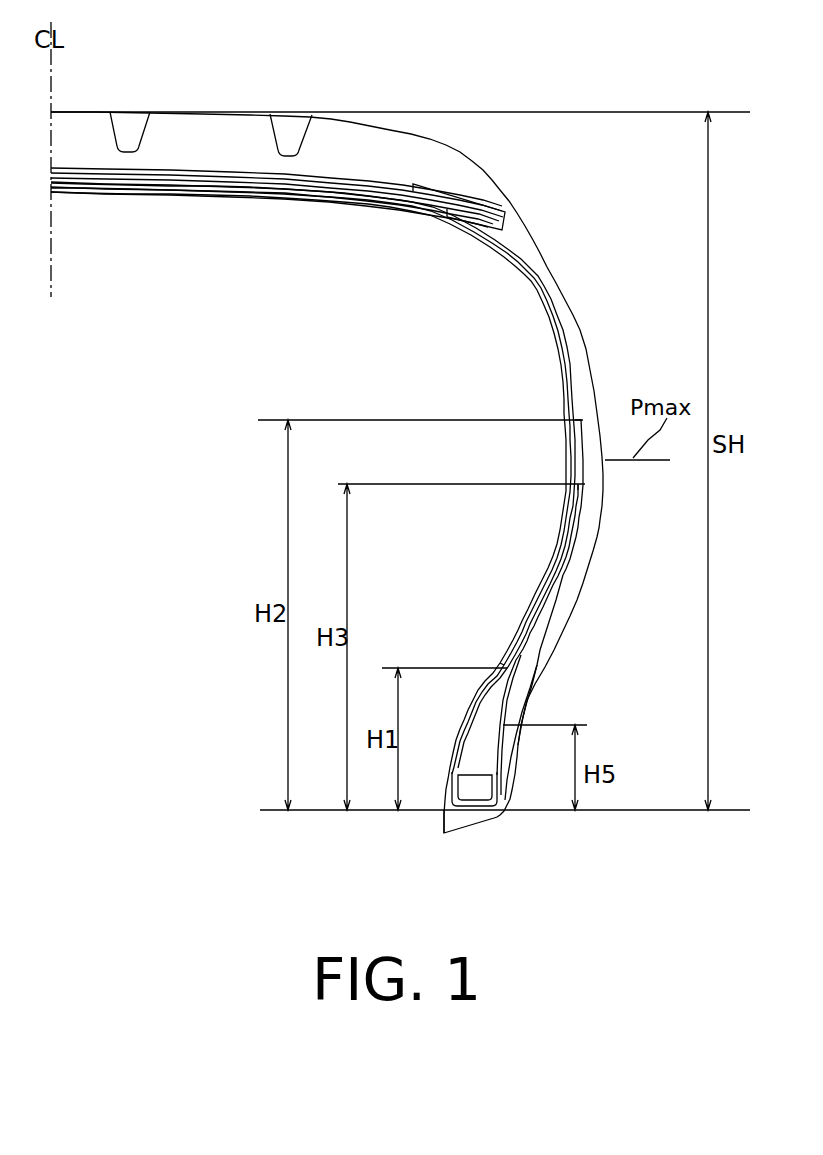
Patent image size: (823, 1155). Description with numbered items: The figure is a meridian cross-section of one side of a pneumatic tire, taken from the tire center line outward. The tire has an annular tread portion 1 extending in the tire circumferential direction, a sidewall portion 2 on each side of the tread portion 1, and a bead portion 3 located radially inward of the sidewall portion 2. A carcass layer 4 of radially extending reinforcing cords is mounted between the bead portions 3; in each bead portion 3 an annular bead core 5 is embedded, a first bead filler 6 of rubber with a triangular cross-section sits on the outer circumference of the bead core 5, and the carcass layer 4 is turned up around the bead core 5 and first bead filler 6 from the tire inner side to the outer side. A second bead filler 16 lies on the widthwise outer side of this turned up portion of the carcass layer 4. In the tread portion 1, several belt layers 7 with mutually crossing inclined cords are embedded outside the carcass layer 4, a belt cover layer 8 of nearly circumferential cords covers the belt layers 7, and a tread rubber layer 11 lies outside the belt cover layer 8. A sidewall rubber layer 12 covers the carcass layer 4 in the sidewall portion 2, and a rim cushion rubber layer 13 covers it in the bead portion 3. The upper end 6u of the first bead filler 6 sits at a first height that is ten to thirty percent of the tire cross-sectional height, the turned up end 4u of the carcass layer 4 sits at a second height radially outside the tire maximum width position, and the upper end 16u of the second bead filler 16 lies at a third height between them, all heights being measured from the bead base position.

The tread portion 1 is at (409, 130).
The sidewall portion 2 is at (604, 376).
The bead portion 3 is at (520, 794).
The carcass layer 4 is at (545, 290).
The turned up end of the carcass layer 4u is at (576, 420).
The bead core 5 is at (470, 787).
The first bead filler 6 is at (482, 722).
The upper end of the first bead filler 6u is at (500, 660).
The belt layers 7 is at (400, 198).
The belt cover layer 8 is at (410, 270).
The tread rubber layer 11 is at (236, 127).
The sidewall rubber layer 12 is at (571, 334).
The rim cushion rubber layer 13 is at (503, 753).
The second bead filler 16 is at (553, 607).
The upper end of the second bead filler 16u is at (576, 486).